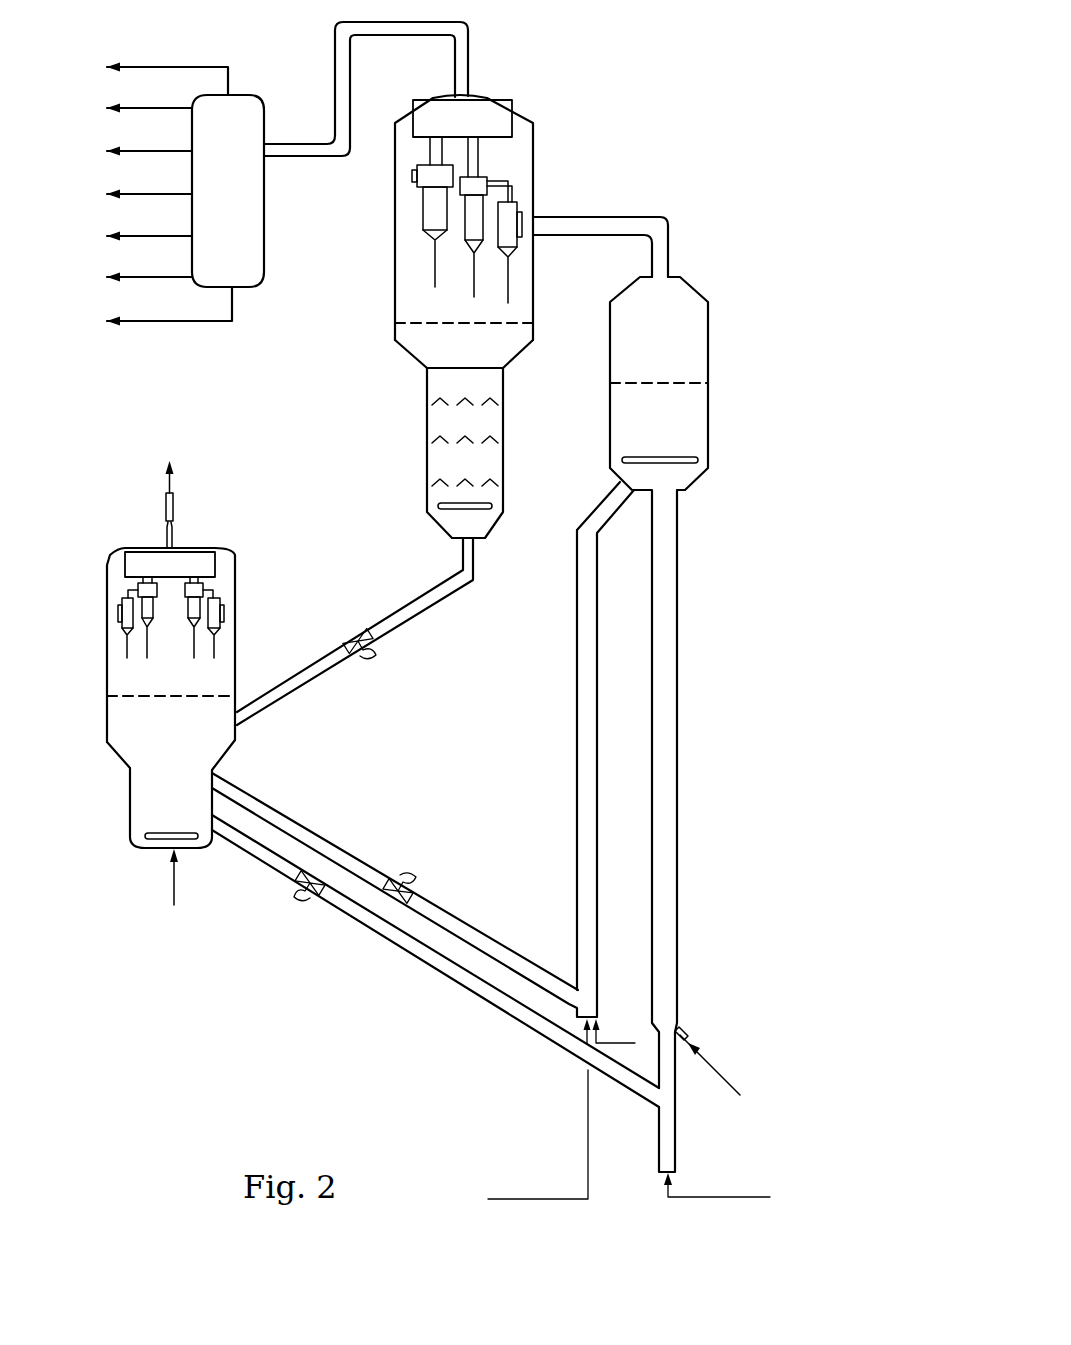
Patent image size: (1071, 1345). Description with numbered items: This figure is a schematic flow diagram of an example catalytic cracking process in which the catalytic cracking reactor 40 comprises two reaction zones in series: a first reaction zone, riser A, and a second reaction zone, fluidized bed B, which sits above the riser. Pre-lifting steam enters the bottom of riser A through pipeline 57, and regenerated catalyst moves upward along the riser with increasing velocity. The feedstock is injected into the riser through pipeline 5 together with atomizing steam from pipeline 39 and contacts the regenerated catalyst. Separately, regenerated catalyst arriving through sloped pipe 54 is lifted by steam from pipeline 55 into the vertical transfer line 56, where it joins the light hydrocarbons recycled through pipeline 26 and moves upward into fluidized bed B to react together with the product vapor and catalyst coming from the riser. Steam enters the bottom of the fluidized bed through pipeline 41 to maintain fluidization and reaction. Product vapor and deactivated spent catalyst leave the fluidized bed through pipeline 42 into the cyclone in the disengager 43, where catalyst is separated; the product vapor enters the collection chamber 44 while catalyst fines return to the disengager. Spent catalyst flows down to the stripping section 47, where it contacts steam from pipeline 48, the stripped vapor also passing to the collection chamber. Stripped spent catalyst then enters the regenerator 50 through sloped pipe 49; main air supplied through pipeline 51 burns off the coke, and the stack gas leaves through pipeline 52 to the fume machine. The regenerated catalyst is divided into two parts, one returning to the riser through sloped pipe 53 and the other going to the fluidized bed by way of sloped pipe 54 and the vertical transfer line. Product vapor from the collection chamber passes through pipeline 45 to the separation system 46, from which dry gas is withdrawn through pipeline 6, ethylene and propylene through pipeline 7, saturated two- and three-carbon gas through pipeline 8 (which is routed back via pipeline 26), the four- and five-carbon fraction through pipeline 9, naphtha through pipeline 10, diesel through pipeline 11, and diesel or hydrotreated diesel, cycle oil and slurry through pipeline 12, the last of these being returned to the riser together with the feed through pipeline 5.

The pipeline 5 is at (710, 1071).
The pipeline 6 is at (167, 71).
The pipeline 7 is at (149, 100).
The pipeline 8 is at (149, 143).
The pipeline 9 is at (149, 186).
The pipeline 10 is at (149, 228).
The pipeline 11 is at (149, 269).
The pipeline 12 is at (169, 306).
The pipeline 26 is at (570, 1023).
The pipeline 39 is at (713, 1062).
The catalytic cracking reactor 40 is at (665, 565).
The pipeline 41 is at (610, 457).
The pipeline 42 is at (577, 230).
The disengager 43 is at (395, 240).
The collection chamber 44 is at (462, 118).
The pipeline 45 is at (340, 82).
The separation system 46 is at (228, 191).
The stripping section 47 is at (437, 423).
The pipeline 48 is at (427, 507).
The sloped pipe 49 is at (355, 631).
The regenerator 50 is at (171, 698).
The pipeline 51 is at (185, 877).
The pipeline 52 is at (183, 504).
The sloped pipe 53 is at (435, 961).
The sloped pipe 54 is at (404, 895).
The pipeline 55 is at (610, 1031).
The vertical transfer line 56 is at (586, 813).
The pipeline 57 is at (717, 1185).